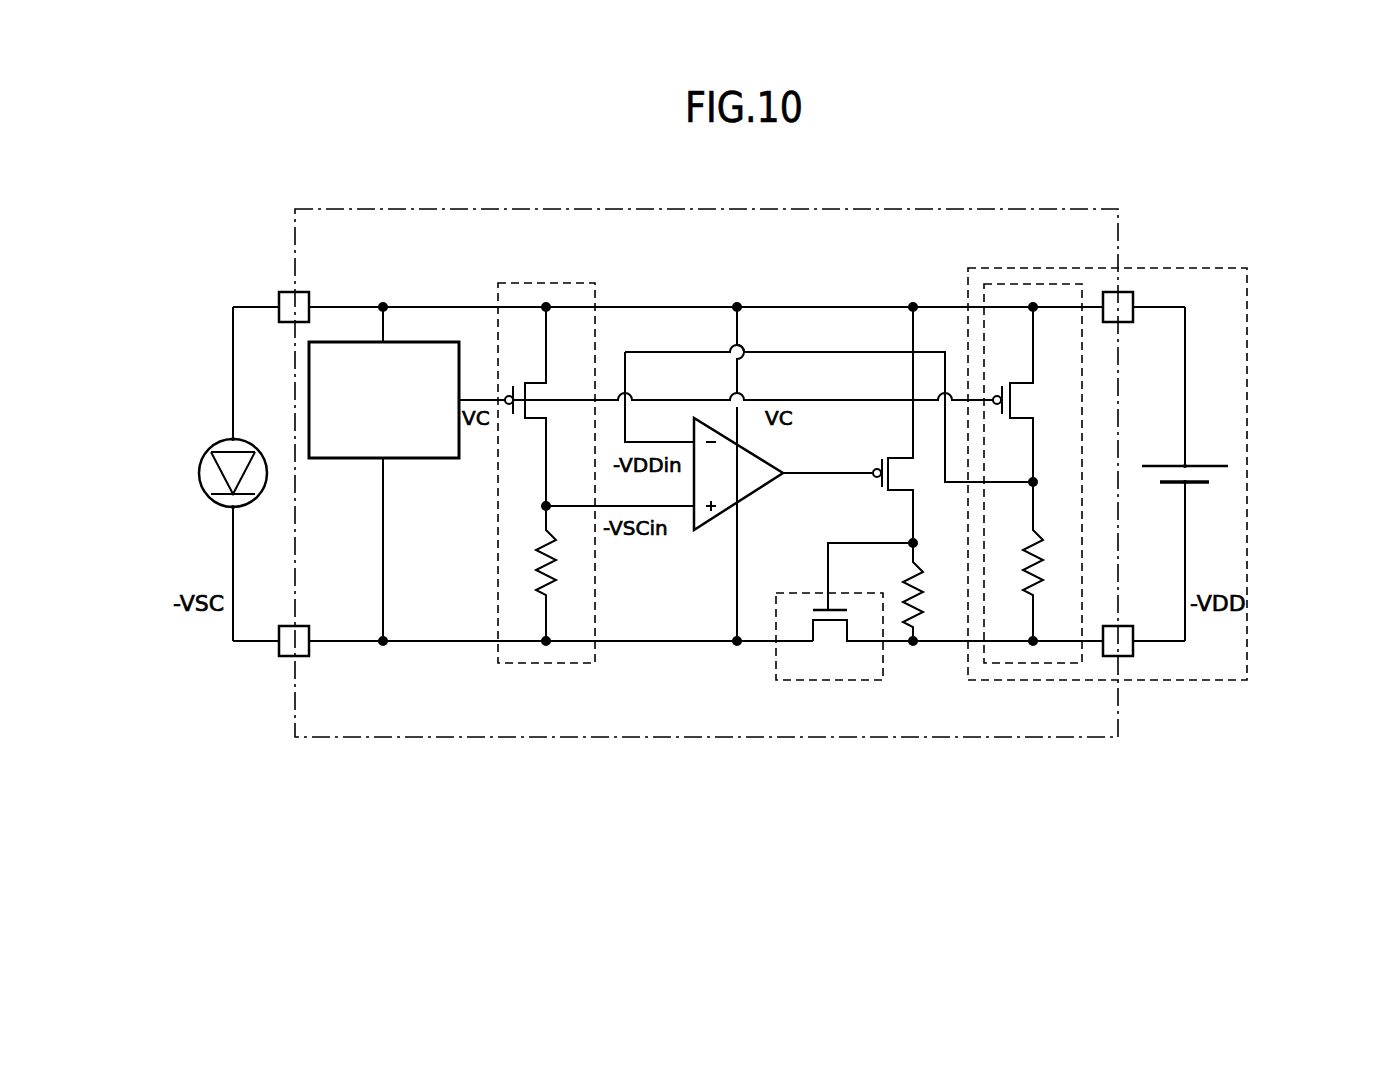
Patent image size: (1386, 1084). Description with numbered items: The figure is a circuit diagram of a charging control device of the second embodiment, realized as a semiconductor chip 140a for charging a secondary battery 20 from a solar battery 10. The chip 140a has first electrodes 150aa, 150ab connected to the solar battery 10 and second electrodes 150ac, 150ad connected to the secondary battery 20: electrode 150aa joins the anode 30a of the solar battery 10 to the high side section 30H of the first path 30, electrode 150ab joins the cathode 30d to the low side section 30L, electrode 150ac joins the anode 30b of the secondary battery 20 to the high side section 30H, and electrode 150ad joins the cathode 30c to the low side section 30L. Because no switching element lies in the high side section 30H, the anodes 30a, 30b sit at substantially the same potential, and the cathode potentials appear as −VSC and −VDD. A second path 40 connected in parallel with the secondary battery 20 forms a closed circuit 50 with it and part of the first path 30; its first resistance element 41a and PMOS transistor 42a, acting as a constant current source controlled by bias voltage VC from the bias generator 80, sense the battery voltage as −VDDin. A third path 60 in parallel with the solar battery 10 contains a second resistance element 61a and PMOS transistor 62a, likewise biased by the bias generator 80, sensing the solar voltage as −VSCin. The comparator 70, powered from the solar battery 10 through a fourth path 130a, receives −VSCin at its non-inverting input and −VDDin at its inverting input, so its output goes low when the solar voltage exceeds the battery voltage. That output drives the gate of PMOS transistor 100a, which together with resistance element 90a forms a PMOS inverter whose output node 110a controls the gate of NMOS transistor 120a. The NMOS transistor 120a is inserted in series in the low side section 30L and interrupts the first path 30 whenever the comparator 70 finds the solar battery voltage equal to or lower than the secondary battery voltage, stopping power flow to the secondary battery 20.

The solar battery 10 is at (264, 485).
The secondary battery 20 is at (1195, 462).
The first path 30 is at (120, 427).
The high side section 30H is at (233, 375).
The low side section 30L is at (233, 555).
The anode 30a is at (237, 437).
The anode 30b is at (1181, 463).
The cathode 30c is at (1181, 486).
The cathode 30d is at (236, 510).
The second path 40 is at (1052, 284).
The first resistance element 41a is at (1040, 555).
The PMOS transistor 42a is at (1017, 422).
The closed circuit 50 is at (1222, 268).
The third path 60 is at (565, 283).
The second resistance element 61a is at (530, 545).
The PMOS transistor 62a is at (527, 422).
The comparator 70 is at (750, 495).
The bias generator 80 is at (428, 458).
The resistance element 90a is at (930, 590).
The PMOS transistor 100a is at (893, 496).
The node 110a is at (910, 541).
The NMOS transistor 120a is at (848, 680).
The fourth path 130a is at (737, 575).
The semiconductor chip 140a is at (1020, 209).
The first electrode 150aa is at (290, 296).
The first electrode 150ab is at (290, 660).
The second electrode 150ac is at (1120, 295).
The second electrode 150ad is at (1120, 658).